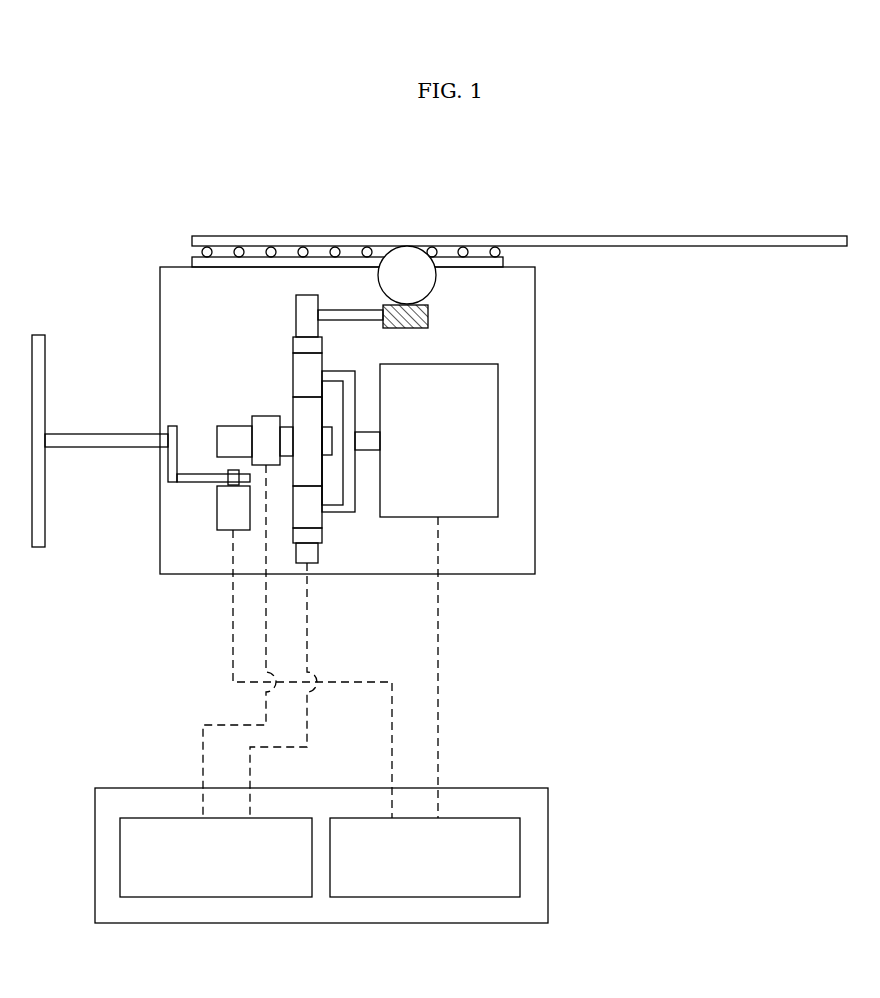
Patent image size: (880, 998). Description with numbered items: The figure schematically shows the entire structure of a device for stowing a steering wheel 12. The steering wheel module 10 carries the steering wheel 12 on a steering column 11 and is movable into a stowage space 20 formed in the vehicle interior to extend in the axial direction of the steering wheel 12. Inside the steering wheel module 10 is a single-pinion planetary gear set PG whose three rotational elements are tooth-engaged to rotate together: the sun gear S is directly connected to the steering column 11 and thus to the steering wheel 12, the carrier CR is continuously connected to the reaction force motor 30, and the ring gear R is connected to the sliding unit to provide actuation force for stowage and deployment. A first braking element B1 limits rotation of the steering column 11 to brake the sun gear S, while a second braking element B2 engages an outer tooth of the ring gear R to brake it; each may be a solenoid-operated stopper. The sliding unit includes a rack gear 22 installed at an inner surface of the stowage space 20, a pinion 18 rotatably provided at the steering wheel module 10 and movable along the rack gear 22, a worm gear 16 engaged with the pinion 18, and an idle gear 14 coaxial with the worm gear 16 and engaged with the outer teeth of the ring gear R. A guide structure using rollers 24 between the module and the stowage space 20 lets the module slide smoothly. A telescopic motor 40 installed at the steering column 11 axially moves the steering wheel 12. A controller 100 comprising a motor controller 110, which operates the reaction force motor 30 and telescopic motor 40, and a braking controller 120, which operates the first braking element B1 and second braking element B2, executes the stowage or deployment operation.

The steering wheel module 10 is at (540, 390).
The steering column 11 is at (105, 447).
The steering wheel 12 is at (40, 547).
The idle gear 14 is at (311, 295).
The worm gear 16 is at (430, 315).
The pinion 18 is at (407, 252).
The stowage space 20 is at (725, 458).
The rack gear 22 is at (663, 236).
The rollers 24 is at (270, 247).
The reaction force motor 30 is at (490, 440).
The telescopic motor 40 is at (217, 530).
The controller 100 is at (548, 840).
The motor controller 110 is at (415, 897).
The braking controller 120 is at (225, 897).
The ring gear R is at (290, 345).
The carrier CR is at (290, 375).
The sun gear S is at (315, 470).
The planetary gear set PG is at (325, 540).
The first braking element B1 is at (265, 420).
The second braking element B2 is at (318, 562).